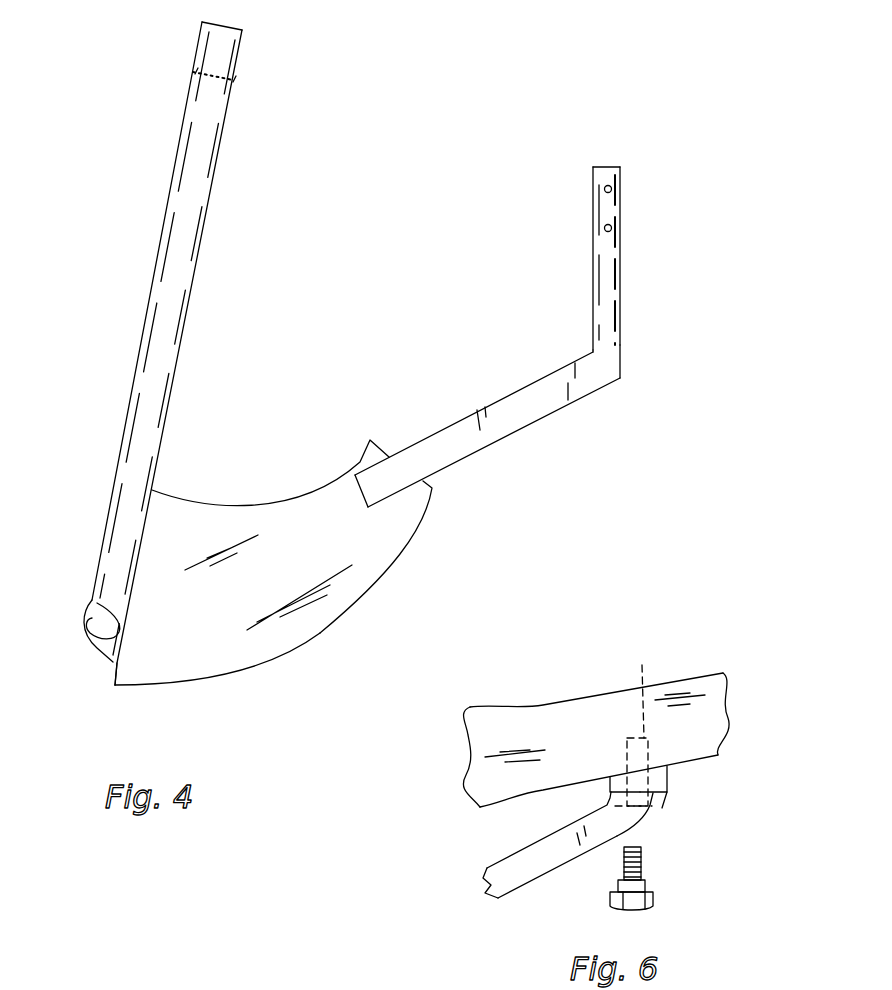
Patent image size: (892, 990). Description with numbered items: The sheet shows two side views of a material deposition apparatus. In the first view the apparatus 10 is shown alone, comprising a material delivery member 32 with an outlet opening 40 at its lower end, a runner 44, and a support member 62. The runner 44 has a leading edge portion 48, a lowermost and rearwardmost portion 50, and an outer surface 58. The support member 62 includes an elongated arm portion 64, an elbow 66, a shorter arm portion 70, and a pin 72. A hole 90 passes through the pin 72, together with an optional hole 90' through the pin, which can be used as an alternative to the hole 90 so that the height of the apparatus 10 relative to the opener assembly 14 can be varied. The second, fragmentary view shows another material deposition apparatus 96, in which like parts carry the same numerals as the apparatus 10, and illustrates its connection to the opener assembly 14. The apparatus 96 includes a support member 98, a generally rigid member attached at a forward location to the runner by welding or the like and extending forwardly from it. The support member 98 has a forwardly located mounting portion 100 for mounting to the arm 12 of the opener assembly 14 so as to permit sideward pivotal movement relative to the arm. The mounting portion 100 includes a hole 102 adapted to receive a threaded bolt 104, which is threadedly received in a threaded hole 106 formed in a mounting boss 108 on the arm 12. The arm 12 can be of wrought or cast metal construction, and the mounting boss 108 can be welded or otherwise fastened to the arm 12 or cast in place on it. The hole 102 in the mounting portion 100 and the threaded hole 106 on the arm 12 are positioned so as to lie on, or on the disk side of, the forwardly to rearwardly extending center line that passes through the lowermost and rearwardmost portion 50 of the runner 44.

In FIG. 4, the apparatus 10 is at (536, 368).
In FIG. 4, the material delivery member 32 is at (244, 63).
In FIG. 4, the outlet opening 40 is at (90, 636).
In FIG. 4, the runner 44 is at (265, 595).
In FIG. 4, the leading edge portion 48 is at (230, 674).
In FIG. 4, the lowermost and rearwardmost portion 50 is at (114, 673).
In FIG. 4, the outer surface 58 is at (382, 556).
In FIG. 4, the support member 62 is at (526, 447).
In FIG. 4, the elongated arm portion 64 is at (463, 462).
In FIG. 4, the elbow 66 is at (622, 382).
In FIG. 4, the shorter arm portion 70 is at (621, 362).
In FIG. 4, the pin 72 is at (615, 268).
In FIG. 4, the hole 90 is at (562, 186).
In FIG. 4, the optional hole 90' is at (654, 218).
In FIG. 6, the arm 12 is at (590, 697).
In FIG. 6, the opener assembly 14 is at (596, 696).
In FIG. 6, the material deposition apparatus 96 is at (584, 882).
In FIG. 6, the support member 98 is at (510, 851).
In FIG. 6, the mounting portion 100 is at (662, 808).
In FIG. 6, the hole 102 is at (657, 756).
In FIG. 6, the threaded bolt 104 is at (653, 903).
In FIG. 6, the threaded hole 106 is at (642, 721).
In FIG. 6, the mounting boss 108 is at (609, 786).